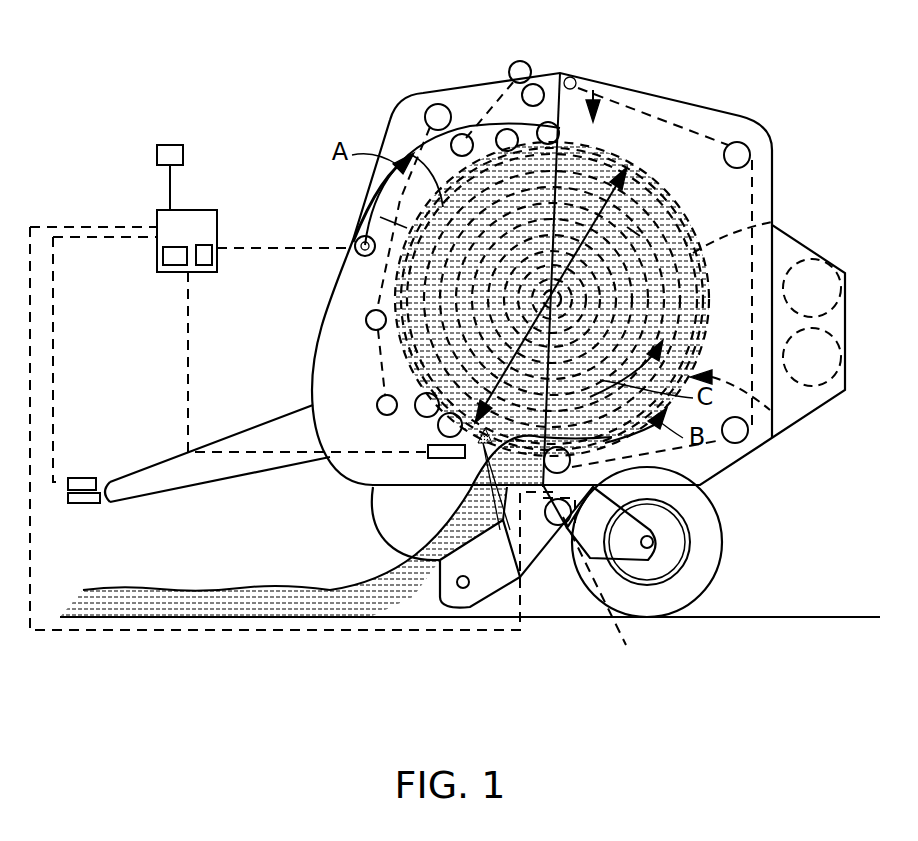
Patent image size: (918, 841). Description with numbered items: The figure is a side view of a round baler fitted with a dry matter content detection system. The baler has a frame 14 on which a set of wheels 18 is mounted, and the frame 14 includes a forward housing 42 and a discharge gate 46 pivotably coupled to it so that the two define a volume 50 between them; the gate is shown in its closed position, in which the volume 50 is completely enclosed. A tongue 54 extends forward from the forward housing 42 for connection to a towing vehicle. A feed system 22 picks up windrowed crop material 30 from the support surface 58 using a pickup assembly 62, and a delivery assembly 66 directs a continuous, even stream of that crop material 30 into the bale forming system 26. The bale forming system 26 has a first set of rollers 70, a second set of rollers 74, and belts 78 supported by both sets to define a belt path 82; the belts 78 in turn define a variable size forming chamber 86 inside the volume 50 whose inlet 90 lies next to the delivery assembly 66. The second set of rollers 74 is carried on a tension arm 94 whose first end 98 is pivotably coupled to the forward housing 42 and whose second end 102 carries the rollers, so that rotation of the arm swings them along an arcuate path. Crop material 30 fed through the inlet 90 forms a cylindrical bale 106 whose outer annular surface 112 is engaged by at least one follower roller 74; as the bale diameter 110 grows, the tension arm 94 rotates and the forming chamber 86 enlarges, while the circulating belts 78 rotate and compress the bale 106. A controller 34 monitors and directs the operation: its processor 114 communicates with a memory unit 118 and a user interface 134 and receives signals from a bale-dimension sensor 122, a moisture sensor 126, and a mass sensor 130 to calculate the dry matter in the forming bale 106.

The frame 14 is at (290, 410).
The wheels 18 is at (722, 572).
The feed system 22 is at (528, 585).
The bale forming system 26 is at (638, 118).
The crop material 30 is at (352, 622).
The controller 34 is at (214, 210).
The forward housing 42 is at (407, 100).
The discharge gate 46 is at (757, 120).
The volume 50 is at (594, 95).
The tongue 54 is at (180, 490).
The support surface 58 is at (790, 620).
The pickup assembly 62 is at (455, 602).
The delivery assembly 66 is at (580, 575).
The first set of rollers 70 is at (436, 105).
The second set of rollers 74 is at (458, 134).
The belts 78 is at (684, 112).
The belt path 82 is at (405, 140).
The forming chamber 86 is at (773, 222).
The inlet 90 is at (572, 600).
The tension arm 94 is at (403, 203).
The first end 98 is at (380, 217).
The second end 102 is at (559, 72).
The bale 106 is at (627, 227).
The bale diameter 110 is at (630, 172).
The outer annular surface 112 is at (770, 410).
The processor 114 is at (172, 273).
The memory unit 118 is at (203, 273).
The bale-dimension sensor 122 is at (355, 244).
The moisture sensor 126 is at (426, 452).
The mass sensor 130 is at (608, 594).
The user interface 134 is at (157, 155).